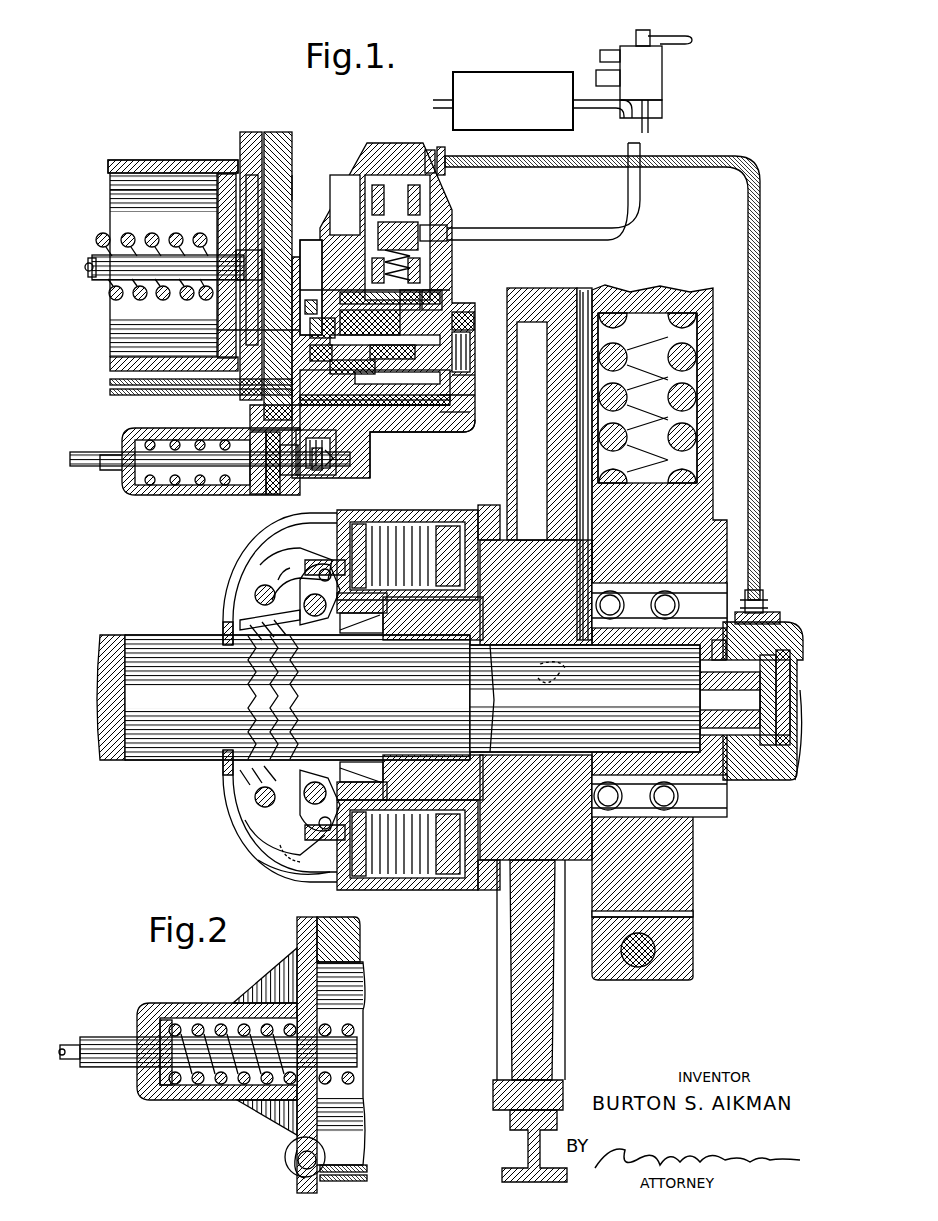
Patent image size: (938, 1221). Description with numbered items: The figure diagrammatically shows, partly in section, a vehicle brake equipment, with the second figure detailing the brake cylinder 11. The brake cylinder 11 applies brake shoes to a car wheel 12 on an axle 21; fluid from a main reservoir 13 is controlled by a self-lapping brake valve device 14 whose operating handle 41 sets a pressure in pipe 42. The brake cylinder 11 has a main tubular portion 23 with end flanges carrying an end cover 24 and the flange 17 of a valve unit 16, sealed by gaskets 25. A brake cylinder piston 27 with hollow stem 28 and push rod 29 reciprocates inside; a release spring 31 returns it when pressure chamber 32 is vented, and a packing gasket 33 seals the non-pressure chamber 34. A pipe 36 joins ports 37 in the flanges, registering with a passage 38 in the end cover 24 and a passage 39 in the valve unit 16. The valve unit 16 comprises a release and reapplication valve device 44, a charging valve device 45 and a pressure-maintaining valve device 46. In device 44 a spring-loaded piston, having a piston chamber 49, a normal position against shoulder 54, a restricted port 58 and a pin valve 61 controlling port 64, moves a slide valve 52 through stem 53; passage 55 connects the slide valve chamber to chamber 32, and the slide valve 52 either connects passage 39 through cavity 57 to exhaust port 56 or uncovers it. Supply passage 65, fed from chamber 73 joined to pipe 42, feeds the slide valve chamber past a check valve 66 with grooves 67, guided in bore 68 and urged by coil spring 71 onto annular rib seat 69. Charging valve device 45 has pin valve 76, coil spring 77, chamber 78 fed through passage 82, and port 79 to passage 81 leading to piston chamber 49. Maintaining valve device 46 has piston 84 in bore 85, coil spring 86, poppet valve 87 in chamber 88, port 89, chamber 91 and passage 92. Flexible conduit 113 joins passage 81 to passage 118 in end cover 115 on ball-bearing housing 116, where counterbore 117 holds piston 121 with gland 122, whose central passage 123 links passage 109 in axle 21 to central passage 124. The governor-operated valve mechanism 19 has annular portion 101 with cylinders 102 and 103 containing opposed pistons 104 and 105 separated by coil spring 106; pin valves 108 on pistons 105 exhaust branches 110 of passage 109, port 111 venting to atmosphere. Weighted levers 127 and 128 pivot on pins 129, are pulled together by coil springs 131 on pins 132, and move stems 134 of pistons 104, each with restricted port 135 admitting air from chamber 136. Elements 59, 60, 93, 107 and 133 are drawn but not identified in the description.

In FIG. 1, the brake cylinder 11 is at (159, 150).
In FIG. 1, the car wheel 12 is at (510, 990).
In FIG. 1, the main reservoir 13 is at (520, 68).
In FIG. 1, the self-lapping brake valve device 14 is at (606, 48).
In FIG. 1, the valve unit 16 is at (364, 137).
In FIG. 1, the flange 17 is at (282, 140).
In FIG. 1, the governor-operated valve mechanism 19 is at (214, 586).
In FIG. 1, the axle 21 is at (118, 635).
In FIG. 1, the main tubular portion 23 is at (108, 166).
In FIG. 2, the main tubular portion 23 is at (362, 953).
In FIG. 2, the end cover 24 is at (245, 1003).
In FIG. 1, the gaskets 25 is at (258, 115).
In FIG. 2, the gaskets 25 is at (300, 934).
In FIG. 1, the brake cylinder piston 27 is at (226, 174).
In FIG. 1, the hollow stem 28 is at (115, 279).
In FIG. 2, the hollow stem 28 is at (112, 1045).
In FIG. 1, the push rod 29 is at (88, 267).
In FIG. 2, the push rod 29 is at (70, 1044).
In FIG. 1, the release spring 31 is at (100, 238).
In FIG. 2, the release spring 31 is at (352, 1028).
In FIG. 1, the chamber 32 is at (282, 185).
In FIG. 2, the annular packing gasket 33 is at (166, 1018).
In FIG. 1, the chamber 34 is at (125, 191).
In FIG. 2, the chamber 34 is at (340, 988).
In FIG. 1, the pipe 36 is at (110, 386).
In FIG. 2, the pipe 36 is at (360, 1166).
In FIG. 2, the ports 37 is at (292, 1172).
In FIG. 2, the passage 38 is at (290, 1147).
In FIG. 1, the passage 39 is at (418, 425).
In FIG. 1, the operating handle 41 is at (684, 43).
In FIG. 1, the pipe 42 is at (640, 215).
In FIG. 1, the release and reapplication valve device 44 is at (445, 298).
In FIG. 1, the charging valve device 45 is at (447, 228).
In FIG. 1, the pressure-maintaining valve device 46 is at (231, 486).
In FIG. 1, the piston chamber 49 is at (302, 262).
In FIG. 1, the slide valve 52 is at (450, 432).
In FIG. 1, the stem 53 is at (460, 320).
In FIG. 1, the shoulder 54 is at (370, 322).
In FIG. 1, the passage 55 is at (368, 430).
In FIG. 1, the exhaust port 56 is at (395, 428).
In FIG. 1, the cavity 57 is at (303, 299).
In FIG. 1, the restricted port 58 is at (317, 322).
In FIG. 1, the valve stem 59 is at (401, 344).
In FIG. 1, the valve seat 60 is at (316, 348).
In FIG. 1, the pin valve 61 is at (357, 363).
In FIG. 1, the port 64 is at (235, 330).
In FIG. 1, the supply passage 65 is at (430, 286).
In FIG. 1, the check valve 66 is at (448, 372).
In FIG. 1, the grooves 67 is at (461, 287).
In FIG. 1, the bore 68 is at (445, 392).
In FIG. 1, the annular rib seat 69 is at (440, 412).
In FIG. 1, the coil spring 71 is at (462, 348).
In FIG. 1, the chamber 73 is at (454, 261).
In FIG. 1, the pin valve 76 is at (420, 188).
In FIG. 1, the coil spring 77 is at (430, 262).
In FIG. 1, the chamber 78 is at (445, 194).
In FIG. 1, the port 79 is at (418, 160).
In FIG. 1, the passage 81 is at (392, 158).
In FIG. 1, the passage 82 is at (430, 210).
In FIG. 1, the piston 84 is at (258, 478).
In FIG. 1, the bore 85 is at (205, 478).
In FIG. 1, the coil spring 86 is at (125, 470).
In FIG. 1, the poppet valve 87 is at (320, 472).
In FIG. 1, the chamber 88 is at (346, 468).
In FIG. 1, the port 89 is at (293, 478).
In FIG. 1, the chamber 91 is at (273, 478).
In FIG. 1, the passage 92 is at (265, 412).
In FIG. 1, the valve 93 is at (338, 470).
In FIG. 1, the annular portion 101 is at (410, 696).
In FIG. 1, the cylinder 102 is at (398, 512).
In FIG. 1, the cylinder 103 is at (405, 893).
In FIG. 1, the piston 104 is at (360, 524).
In FIG. 1, the piston 105 is at (450, 526).
In FIG. 1, the coil spring 106 is at (447, 500).
In FIG. 1, the cavity 107 is at (356, 695).
In FIG. 1, the pin valve 108 is at (478, 535).
In FIG. 1, the passage 109 is at (556, 671).
In FIG. 1, the branches 110 is at (466, 700).
In FIG. 1, the port 111 is at (482, 500).
In FIG. 1, the flexible conduit 113 is at (748, 243).
In FIG. 1, the end cover 115 is at (728, 775).
In FIG. 1, the ball-bearing housing 116 is at (672, 905).
In FIG. 1, the counterbore 117 is at (722, 728).
In FIG. 1, the passage 118 is at (763, 605).
In FIG. 1, the piston 121 is at (762, 775).
In FIG. 1, the self-lubricating packing 122 is at (728, 638).
In FIG. 1, the central passage 123 is at (720, 700).
In FIG. 1, the central passage 124 is at (790, 775).
In FIG. 1, the weighted lever 127 is at (265, 570).
In FIG. 1, the weighted lever 128 is at (262, 840).
In FIG. 1, the pins 129 is at (252, 605).
In FIG. 1, the coil springs 131 is at (270, 775).
In FIG. 1, the pins 132 is at (258, 592).
In FIG. 1, the link 133 is at (285, 565).
In FIG. 1, the stem 134 is at (262, 862).
In FIG. 1, the restricted port 135 is at (318, 842).
In FIG. 1, the chamber 136 is at (278, 845).